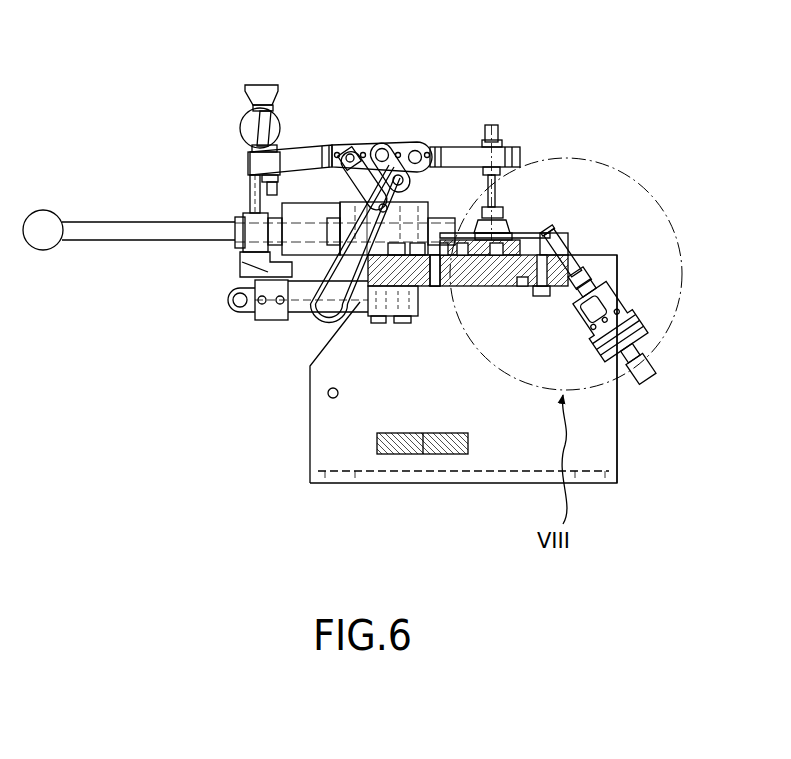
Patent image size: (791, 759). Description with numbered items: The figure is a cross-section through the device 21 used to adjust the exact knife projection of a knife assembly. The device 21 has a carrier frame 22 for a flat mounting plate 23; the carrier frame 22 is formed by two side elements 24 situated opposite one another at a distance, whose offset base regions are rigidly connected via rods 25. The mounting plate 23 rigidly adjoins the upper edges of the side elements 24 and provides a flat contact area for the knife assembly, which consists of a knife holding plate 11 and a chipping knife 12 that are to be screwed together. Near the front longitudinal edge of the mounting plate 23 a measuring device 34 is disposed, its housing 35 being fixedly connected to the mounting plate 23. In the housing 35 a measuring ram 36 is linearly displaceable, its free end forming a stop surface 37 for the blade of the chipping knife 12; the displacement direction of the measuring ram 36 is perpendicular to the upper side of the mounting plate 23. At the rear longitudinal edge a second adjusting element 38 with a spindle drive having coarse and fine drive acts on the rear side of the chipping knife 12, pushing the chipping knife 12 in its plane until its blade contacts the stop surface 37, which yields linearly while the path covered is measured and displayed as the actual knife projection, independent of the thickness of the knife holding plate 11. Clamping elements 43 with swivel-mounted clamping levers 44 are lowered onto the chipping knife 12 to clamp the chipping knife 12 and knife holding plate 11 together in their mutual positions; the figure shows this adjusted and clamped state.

The device 21 is at (637, 96).
The carrier frame 22 is at (306, 432).
The mounting plate 23 is at (487, 272).
The side element 24 is at (620, 435).
The rod 25 is at (418, 445).
The knife holding plate 11 is at (440, 258).
The chipping knife 12 is at (455, 237).
The measuring device 34 is at (632, 292).
The housing 35 is at (647, 332).
The measuring ram 36 is at (578, 262).
The stop surface 37 is at (548, 231).
The second adjusting element 38 is at (233, 248).
The clamping element 43 is at (422, 138).
The clamping lever 44 is at (455, 148).